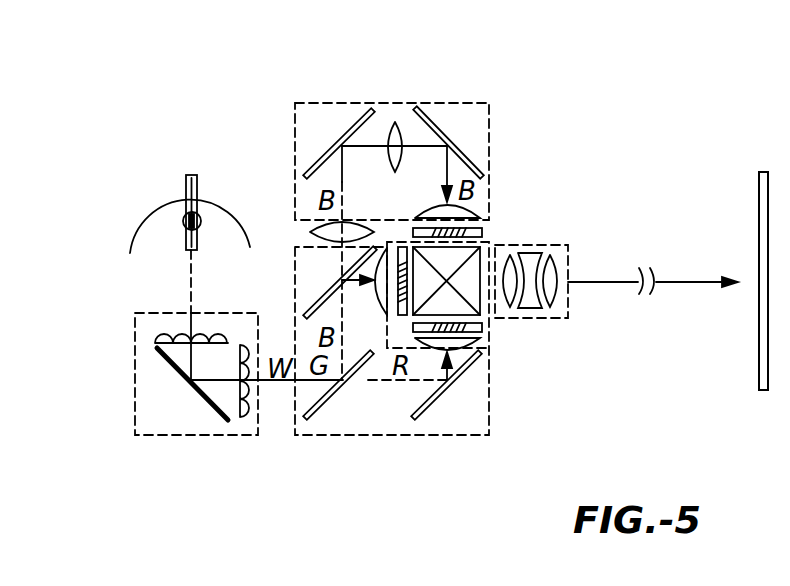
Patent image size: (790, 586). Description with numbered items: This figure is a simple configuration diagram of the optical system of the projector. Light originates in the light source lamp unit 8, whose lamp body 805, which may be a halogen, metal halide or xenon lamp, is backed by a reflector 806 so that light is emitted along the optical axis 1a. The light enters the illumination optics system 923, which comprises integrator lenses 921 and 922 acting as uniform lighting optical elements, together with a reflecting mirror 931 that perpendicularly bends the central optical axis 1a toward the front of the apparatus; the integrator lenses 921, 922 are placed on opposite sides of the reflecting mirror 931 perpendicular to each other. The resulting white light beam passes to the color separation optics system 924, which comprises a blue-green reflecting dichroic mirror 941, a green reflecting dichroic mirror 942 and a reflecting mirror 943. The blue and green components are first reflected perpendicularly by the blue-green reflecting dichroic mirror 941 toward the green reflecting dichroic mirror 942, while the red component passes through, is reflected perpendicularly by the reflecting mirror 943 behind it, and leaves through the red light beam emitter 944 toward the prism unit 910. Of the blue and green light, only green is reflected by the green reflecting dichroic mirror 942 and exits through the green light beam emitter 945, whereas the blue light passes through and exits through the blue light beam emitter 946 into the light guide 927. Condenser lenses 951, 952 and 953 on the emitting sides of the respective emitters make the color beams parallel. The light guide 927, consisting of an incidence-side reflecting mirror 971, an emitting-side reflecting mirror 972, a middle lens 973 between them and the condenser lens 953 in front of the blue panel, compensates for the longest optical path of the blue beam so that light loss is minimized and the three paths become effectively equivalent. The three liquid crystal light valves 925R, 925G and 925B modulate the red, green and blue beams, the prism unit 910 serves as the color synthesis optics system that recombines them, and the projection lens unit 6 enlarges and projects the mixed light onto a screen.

The light source lamp unit 8 is at (186, 198).
The lamp body 805 is at (183, 221).
The reflector 806 is at (140, 240).
The optical axis 1a is at (183, 300).
The integrator lens 921 is at (155, 340).
The integrator lens 922 is at (241, 420).
The illumination optics system 923 is at (135, 387).
The reflecting mirror 931 is at (213, 412).
The light guide 927 is at (294, 127).
The incidence-side reflecting mirror 971 is at (335, 143).
The emitting-side reflecting mirror 972 is at (486, 123).
The middle lens 973 is at (395, 124).
The condenser lens 952 is at (388, 246).
The liquid crystal light valve 925G is at (405, 246).
The condenser lens 953 is at (480, 215).
The liquid crystal light valve 925B is at (482, 232).
The prism unit 910 is at (483, 247).
The liquid crystal light valve 925R is at (482, 327).
The condenser lens 951 is at (480, 345).
The green light beam emitter 945 is at (380, 305).
The red light beam emitter 944 is at (476, 362).
The reflecting mirror 943 is at (430, 410).
The blue-green reflecting dichroic mirror 941 is at (314, 414).
The green reflecting dichroic mirror 942 is at (318, 302).
The blue light beam emitter 946 is at (315, 232).
The color separation optics system 924 is at (490, 412).
The projection lens unit 6 is at (570, 264).